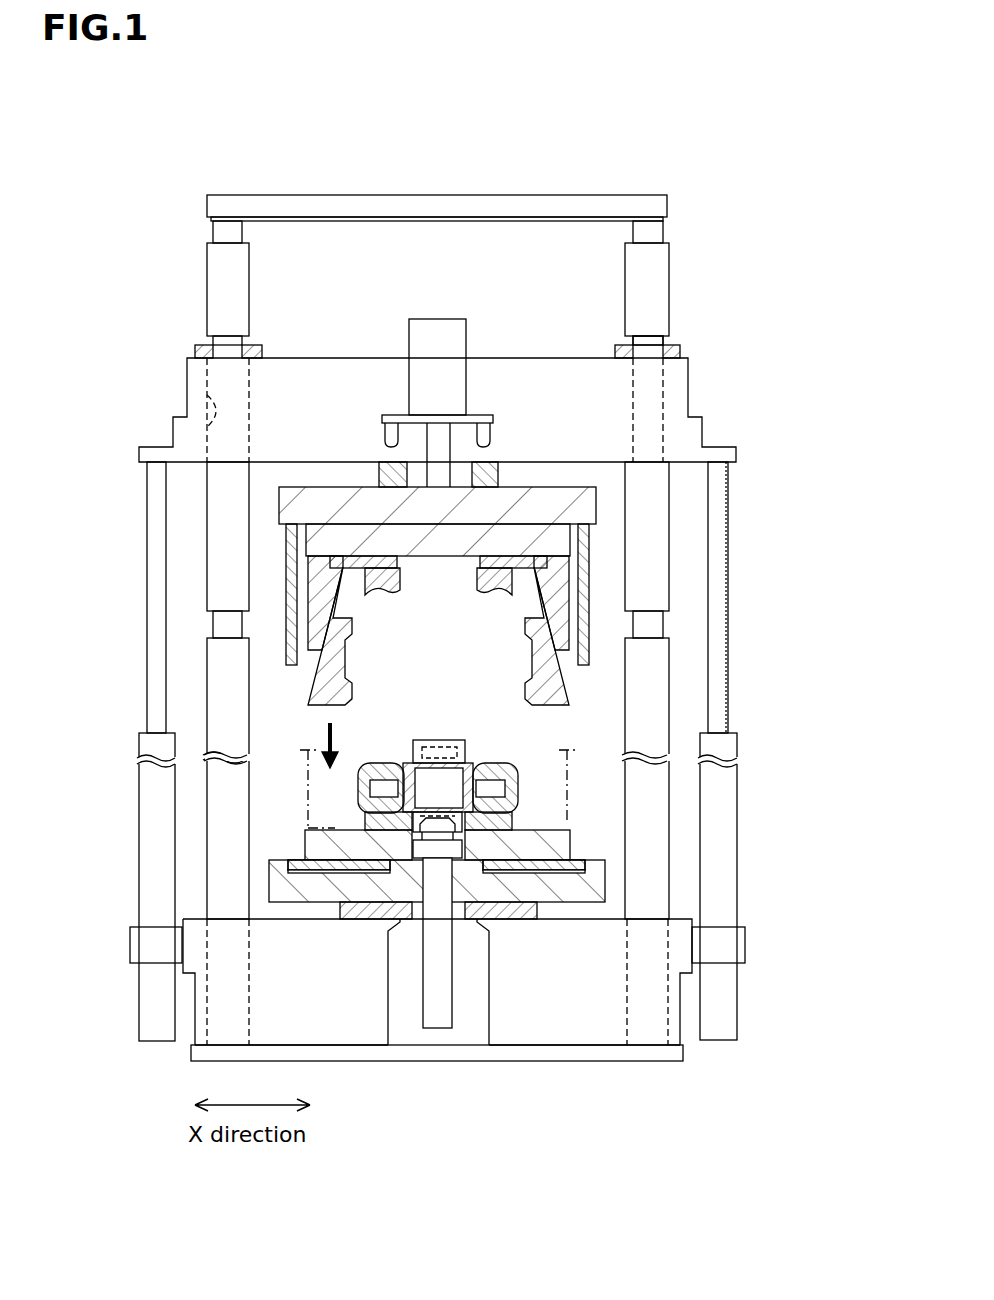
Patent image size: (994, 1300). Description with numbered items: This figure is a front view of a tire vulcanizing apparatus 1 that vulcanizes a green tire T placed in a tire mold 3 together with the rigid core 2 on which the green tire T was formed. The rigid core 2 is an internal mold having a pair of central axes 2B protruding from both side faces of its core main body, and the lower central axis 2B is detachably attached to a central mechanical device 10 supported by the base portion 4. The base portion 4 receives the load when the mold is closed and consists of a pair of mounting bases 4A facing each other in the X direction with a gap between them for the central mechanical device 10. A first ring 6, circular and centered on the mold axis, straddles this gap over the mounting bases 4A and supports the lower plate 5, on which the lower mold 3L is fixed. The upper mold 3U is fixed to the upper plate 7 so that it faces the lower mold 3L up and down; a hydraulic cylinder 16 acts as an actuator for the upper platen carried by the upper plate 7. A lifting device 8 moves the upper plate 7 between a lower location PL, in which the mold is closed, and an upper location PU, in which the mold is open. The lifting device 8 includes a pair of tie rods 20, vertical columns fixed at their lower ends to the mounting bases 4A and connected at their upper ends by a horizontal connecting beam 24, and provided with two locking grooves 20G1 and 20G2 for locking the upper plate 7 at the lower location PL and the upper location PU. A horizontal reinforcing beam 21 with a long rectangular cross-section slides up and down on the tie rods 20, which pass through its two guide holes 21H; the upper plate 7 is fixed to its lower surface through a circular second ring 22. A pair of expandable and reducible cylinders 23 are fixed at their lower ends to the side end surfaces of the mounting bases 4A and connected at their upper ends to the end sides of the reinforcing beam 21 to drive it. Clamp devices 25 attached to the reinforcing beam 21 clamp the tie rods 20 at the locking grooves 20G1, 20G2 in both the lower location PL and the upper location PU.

The tire vulcanizing apparatus 1 is at (748, 154).
The horizontal connecting beam 24 is at (505, 195).
The tie rods 20 is at (206, 272).
The locking groove 20G1 is at (647, 625).
The locking groove 20G2 is at (648, 345).
The clamp devices 25 is at (200, 345).
The lifting device 8 is at (720, 376).
The horizontal reinforcing beam 21 is at (535, 358).
The guide holes 21H is at (207, 395).
The hydraulic cylinder 16 is at (458, 345).
The second ring 22 is at (490, 470).
The upper plate 7 is at (583, 507).
The upper location PU is at (612, 569).
The rigid core 2 is at (543, 750).
The tire mold 3 is at (62, 713).
The upper mold 3U is at (277, 692).
The lower mold 3L is at (263, 824).
The green tire T is at (362, 770).
The central axes 2B is at (466, 753).
The lower location PL is at (573, 790).
The lower plate 5 is at (605, 877).
The first ring 6 is at (517, 910).
The central mechanical device 10 is at (453, 953).
The base portion 4 is at (500, 1132).
The mounting bases 4A is at (363, 1018).
The cylinders 23 is at (158, 882).